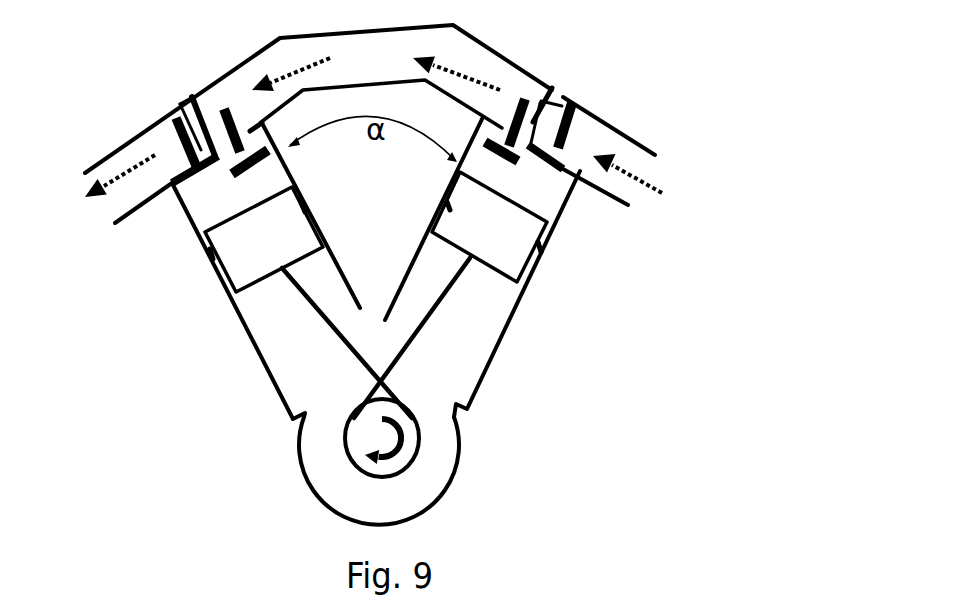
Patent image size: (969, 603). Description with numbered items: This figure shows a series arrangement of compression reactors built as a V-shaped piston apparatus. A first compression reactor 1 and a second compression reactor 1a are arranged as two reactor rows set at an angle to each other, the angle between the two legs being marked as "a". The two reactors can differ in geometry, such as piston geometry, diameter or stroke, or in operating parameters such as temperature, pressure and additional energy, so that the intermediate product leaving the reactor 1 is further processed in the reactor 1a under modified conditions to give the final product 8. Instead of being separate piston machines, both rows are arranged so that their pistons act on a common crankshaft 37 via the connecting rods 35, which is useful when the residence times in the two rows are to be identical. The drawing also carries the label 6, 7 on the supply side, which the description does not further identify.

The compression reactor 1 is at (482, 267).
The compression reactor 1a is at (266, 272).
The final product 8 is at (114, 207).
The intake line 6 is at (645, 170).
The intake air flow 7 is at (660, 199).
The connecting rods 35 is at (337, 320).
The common crankshaft 37 is at (417, 451).